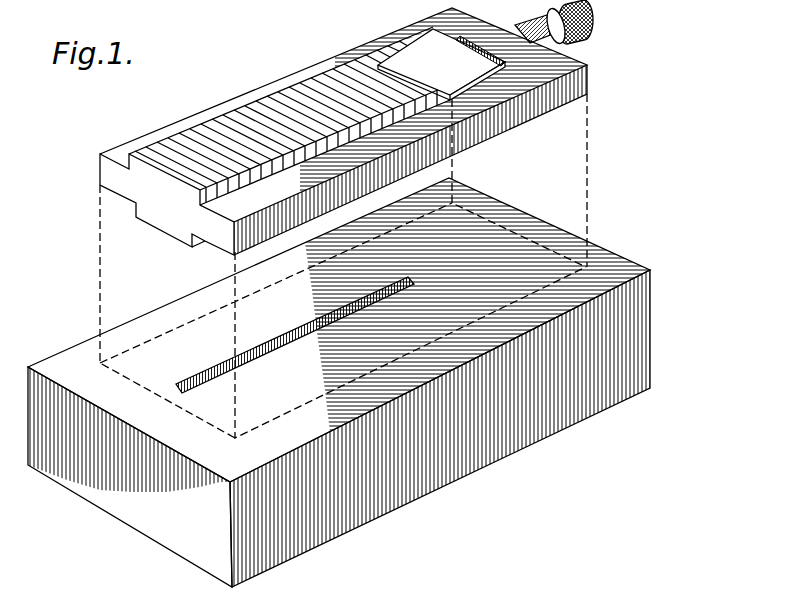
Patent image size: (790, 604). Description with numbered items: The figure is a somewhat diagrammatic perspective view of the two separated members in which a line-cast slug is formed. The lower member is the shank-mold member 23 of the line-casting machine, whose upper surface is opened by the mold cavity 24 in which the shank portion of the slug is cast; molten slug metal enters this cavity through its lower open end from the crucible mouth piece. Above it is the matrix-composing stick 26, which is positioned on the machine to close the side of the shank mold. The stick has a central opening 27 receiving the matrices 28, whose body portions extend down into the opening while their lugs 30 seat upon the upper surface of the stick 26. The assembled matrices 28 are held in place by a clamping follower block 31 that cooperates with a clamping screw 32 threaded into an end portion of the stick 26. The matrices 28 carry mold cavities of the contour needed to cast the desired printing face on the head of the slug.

The shank-mold member 23 is at (128, 503).
The mold cavity 24 is at (327, 330).
The matrix-composing stick 26 is at (587, 82).
The central opening 27 is at (480, 43).
The matrices 28 is at (281, 93).
The lugs 30 is at (392, 124).
The clamping follower block 31 is at (417, 50).
The clamping screw 32 is at (592, 17).